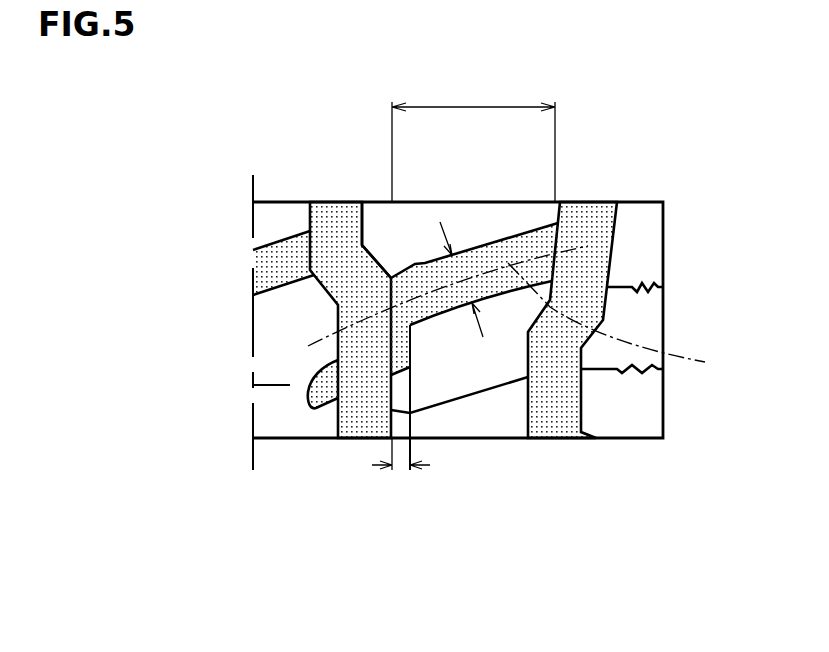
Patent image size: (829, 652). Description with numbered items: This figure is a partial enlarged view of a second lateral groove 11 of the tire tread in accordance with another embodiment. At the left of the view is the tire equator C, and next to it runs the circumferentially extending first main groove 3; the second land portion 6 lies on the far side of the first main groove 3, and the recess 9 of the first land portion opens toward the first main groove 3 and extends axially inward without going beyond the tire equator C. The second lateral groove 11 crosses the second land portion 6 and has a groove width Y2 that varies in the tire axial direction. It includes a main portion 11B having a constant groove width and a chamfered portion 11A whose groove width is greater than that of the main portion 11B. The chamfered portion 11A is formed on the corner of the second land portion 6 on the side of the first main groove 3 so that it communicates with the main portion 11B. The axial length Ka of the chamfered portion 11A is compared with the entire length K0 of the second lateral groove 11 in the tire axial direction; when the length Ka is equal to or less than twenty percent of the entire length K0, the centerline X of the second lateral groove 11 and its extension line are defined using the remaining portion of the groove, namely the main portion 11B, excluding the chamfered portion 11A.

The first main groove 3 is at (327, 220).
The second land portion 6 is at (377, 225).
The recess 9 is at (325, 390).
The second lateral groove 11 is at (490, 285).
The chamfered portion 11A is at (400, 352).
The main portion 11B is at (433, 305).
The tire equator C is at (266, 306).
The centerline X is at (621, 320).
The entire length K0 is at (473, 137).
The length of the chamfered portion Ka is at (401, 472).
The groove width Y2 is at (452, 277).